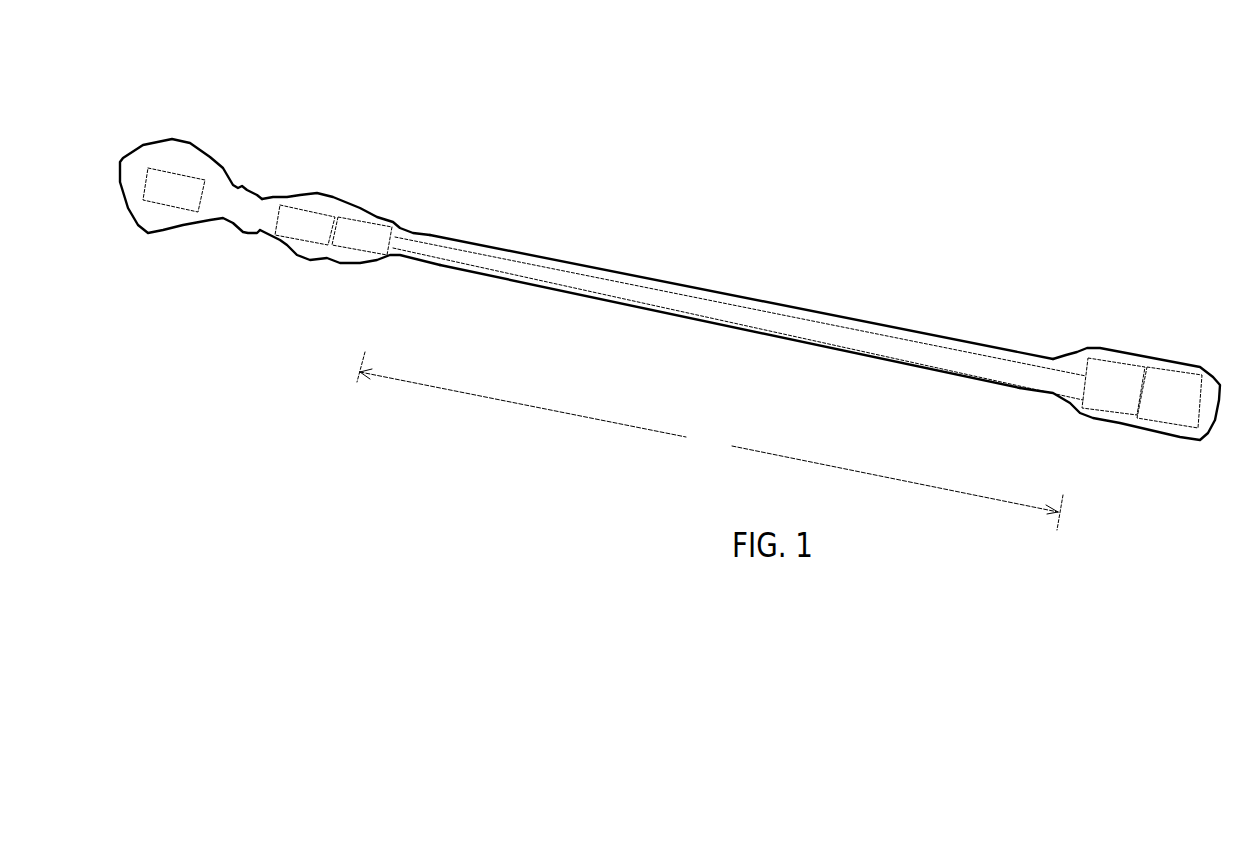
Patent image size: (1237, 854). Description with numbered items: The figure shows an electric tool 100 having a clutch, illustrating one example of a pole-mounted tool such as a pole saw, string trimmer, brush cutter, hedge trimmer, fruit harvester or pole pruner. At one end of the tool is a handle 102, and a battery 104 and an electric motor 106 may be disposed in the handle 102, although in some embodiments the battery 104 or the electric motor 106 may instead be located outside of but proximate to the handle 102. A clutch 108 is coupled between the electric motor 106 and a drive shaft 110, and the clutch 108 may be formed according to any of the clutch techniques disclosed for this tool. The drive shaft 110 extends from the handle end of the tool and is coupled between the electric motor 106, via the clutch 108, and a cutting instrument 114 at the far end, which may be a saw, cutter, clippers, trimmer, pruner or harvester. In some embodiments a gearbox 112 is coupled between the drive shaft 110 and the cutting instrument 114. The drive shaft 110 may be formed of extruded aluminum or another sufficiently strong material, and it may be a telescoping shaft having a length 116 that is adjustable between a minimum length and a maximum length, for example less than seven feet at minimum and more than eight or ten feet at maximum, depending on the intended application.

The electric tool 100 is at (227, 68).
The handle 102 is at (258, 192).
The battery 104 is at (174, 190).
The electric motor 106 is at (305, 225).
The clutch 108 is at (362, 236).
The drive shaft 110 is at (786, 308).
The gearbox 112 is at (1113, 386).
The cutting instrument 114 is at (1169, 397).
The length 116 is at (710, 441).